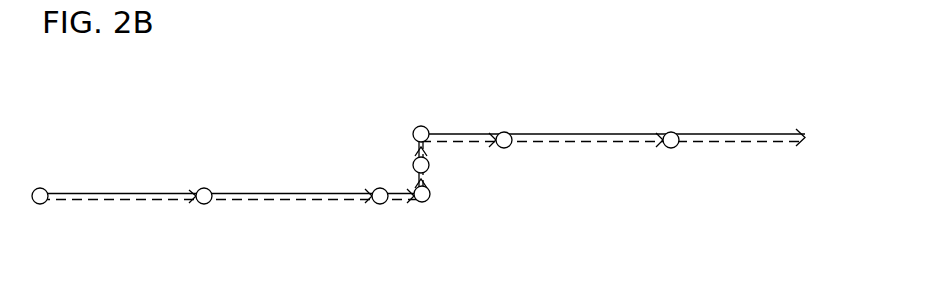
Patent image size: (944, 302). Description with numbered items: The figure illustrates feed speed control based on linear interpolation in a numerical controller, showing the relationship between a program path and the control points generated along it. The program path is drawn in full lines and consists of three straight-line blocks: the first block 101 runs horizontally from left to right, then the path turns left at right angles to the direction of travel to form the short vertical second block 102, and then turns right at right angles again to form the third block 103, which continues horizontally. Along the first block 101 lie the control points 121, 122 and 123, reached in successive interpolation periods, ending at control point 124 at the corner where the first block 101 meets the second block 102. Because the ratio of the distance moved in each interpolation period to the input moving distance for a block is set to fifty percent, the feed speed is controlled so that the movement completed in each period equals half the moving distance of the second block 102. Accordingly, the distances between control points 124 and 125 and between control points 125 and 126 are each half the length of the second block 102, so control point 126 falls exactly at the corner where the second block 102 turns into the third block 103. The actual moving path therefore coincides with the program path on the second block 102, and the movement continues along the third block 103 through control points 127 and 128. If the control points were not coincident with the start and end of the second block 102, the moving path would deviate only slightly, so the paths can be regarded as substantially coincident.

The block 1 101 is at (245, 198).
The block 2 102 is at (416, 150).
The block 3 103 is at (615, 134).
The control point 121 is at (45, 188).
The control point 122 is at (209, 188).
The control point 123 is at (377, 190).
The control point 124 is at (426, 203).
The control point 125 is at (428, 167).
The control point 126 is at (425, 128).
The control point 127 is at (518, 147).
The control point 128 is at (677, 148).